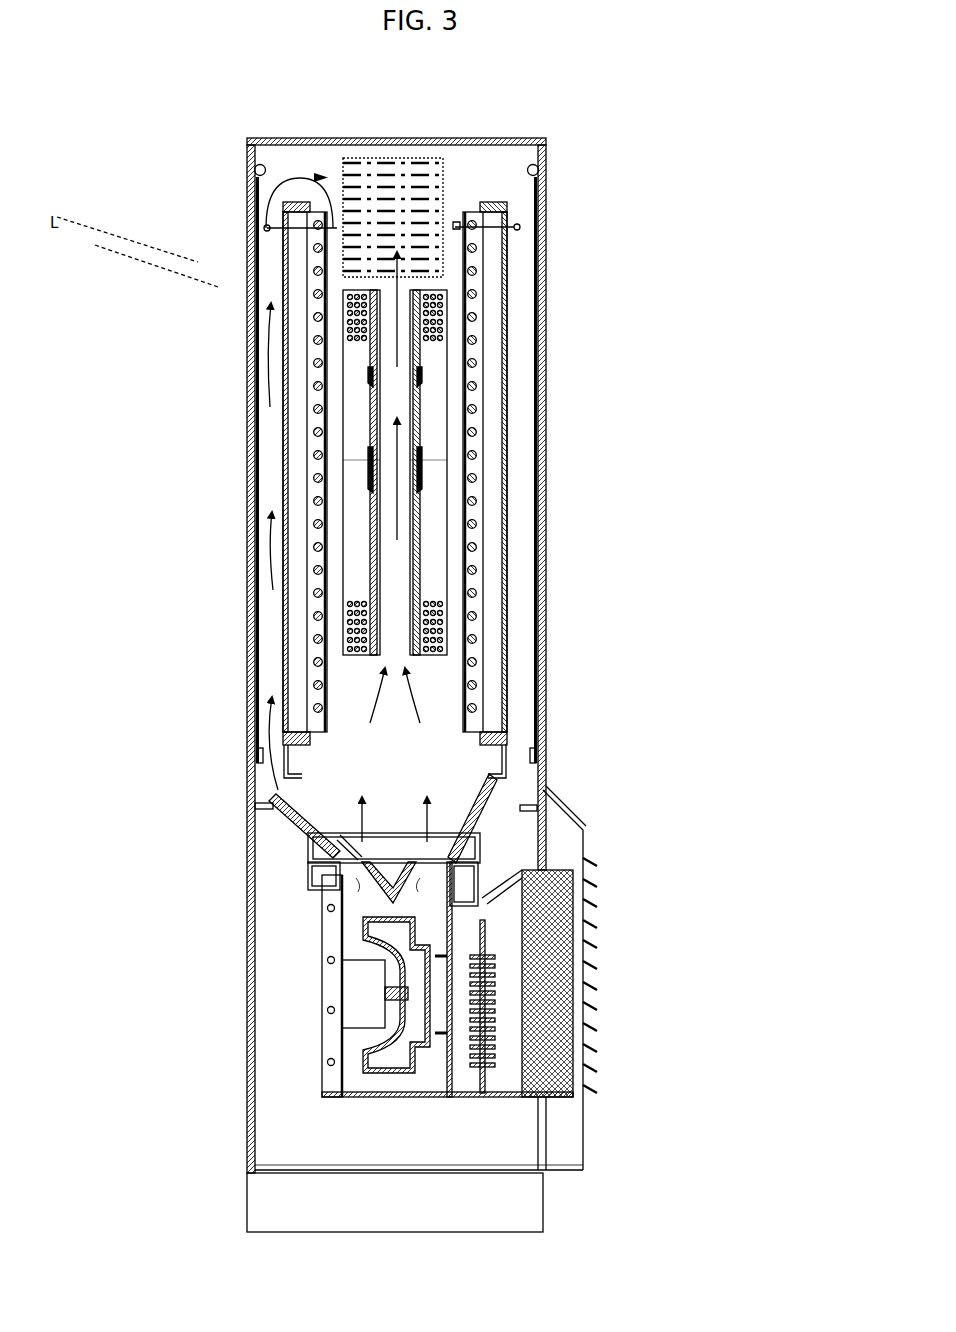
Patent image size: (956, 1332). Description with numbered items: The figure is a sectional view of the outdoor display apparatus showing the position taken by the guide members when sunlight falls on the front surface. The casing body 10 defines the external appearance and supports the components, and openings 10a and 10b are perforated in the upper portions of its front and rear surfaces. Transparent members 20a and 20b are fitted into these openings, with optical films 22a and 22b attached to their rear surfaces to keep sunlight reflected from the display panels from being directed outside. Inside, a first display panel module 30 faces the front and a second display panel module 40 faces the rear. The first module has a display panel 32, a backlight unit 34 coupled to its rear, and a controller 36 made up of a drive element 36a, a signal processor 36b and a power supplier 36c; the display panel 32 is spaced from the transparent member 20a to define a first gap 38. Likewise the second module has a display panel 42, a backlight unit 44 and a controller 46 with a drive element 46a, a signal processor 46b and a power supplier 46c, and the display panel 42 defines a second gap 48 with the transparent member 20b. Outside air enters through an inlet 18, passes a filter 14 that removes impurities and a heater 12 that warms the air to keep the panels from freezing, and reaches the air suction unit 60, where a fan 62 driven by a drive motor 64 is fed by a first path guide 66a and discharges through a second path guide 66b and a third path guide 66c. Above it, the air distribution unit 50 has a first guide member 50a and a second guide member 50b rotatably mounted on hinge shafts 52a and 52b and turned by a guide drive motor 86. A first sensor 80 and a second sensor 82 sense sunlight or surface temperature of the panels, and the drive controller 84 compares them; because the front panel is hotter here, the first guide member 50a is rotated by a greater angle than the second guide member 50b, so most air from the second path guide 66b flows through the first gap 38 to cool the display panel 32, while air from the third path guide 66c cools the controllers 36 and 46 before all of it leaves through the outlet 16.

The casing body 10 is at (549, 139).
The opening 10a is at (256, 166).
The opening 10b is at (537, 166).
The heater 12 is at (470, 1078).
The filter 14 is at (560, 1076).
The outlet 16 is at (398, 158).
The inlet 18 is at (592, 946).
The transparent member 20a is at (256, 532).
The transparent member 20b is at (537, 532).
The optical film 22a is at (250, 575).
The optical film 22b is at (543, 575).
The first display panel module 30 is at (267, 438).
The display panel 32 is at (298, 315).
The backlight unit 34 is at (318, 662).
The controller 36 is at (357, 290).
The drive element 36a is at (368, 376).
The signal processor 36b is at (368, 491).
The power supplier 36c is at (350, 603).
The first gap 38 is at (272, 695).
The second display panel module 40 is at (523, 438).
The display panel 42 is at (494, 315).
The backlight unit 44 is at (474, 662).
The controller 46 is at (433, 290).
The drive element 46a is at (422, 376).
The signal processor 46b is at (422, 491).
The power supplier 46c is at (442, 603).
The second gap 48 is at (521, 695).
The air distribution unit 50 is at (376, 818).
The first guide member 50a is at (300, 823).
The second guide member 50b is at (498, 782).
The hinge shaft 52a is at (312, 860).
The hinge shaft 52b is at (478, 866).
The air suction unit 60 is at (300, 950).
The fan 62 is at (390, 1068).
The drive motor 64 is at (355, 996).
The first path guide 66a is at (496, 1006).
The second path guide 66b is at (322, 893).
The third path guide 66c is at (505, 886).
The first sensor 80 is at (264, 228).
The second sensor 82 is at (520, 227).
The drive controller 84 is at (314, 178).
The guide drive motor 86 is at (396, 832).